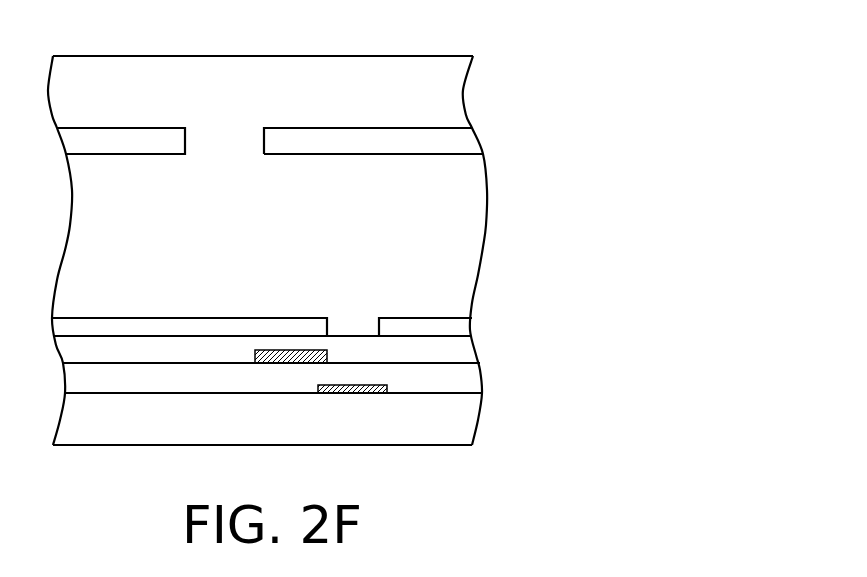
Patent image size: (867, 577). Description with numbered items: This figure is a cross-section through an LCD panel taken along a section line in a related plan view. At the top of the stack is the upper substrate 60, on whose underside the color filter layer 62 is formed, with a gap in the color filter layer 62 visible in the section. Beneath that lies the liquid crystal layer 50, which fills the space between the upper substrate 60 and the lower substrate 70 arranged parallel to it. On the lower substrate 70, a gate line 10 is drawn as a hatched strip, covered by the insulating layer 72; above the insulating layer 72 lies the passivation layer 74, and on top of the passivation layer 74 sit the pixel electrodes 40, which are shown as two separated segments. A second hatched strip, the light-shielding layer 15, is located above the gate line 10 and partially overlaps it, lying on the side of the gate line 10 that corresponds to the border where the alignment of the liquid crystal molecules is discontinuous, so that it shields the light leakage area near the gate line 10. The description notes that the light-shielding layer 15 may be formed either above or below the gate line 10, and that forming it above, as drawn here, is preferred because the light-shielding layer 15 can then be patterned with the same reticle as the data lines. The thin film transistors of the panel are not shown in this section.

The gate line 10 is at (368, 385).
The light-shielding layer 15 is at (323, 351).
The pixel electrode 40 is at (97, 325).
The liquid crystal layer 50 is at (88, 203).
The upper substrate 60 is at (395, 70).
The color filter layer 62 is at (472, 145).
The lower substrate 70 is at (417, 430).
The insulating layer 72 is at (467, 383).
The passivation layer 74 is at (462, 355).